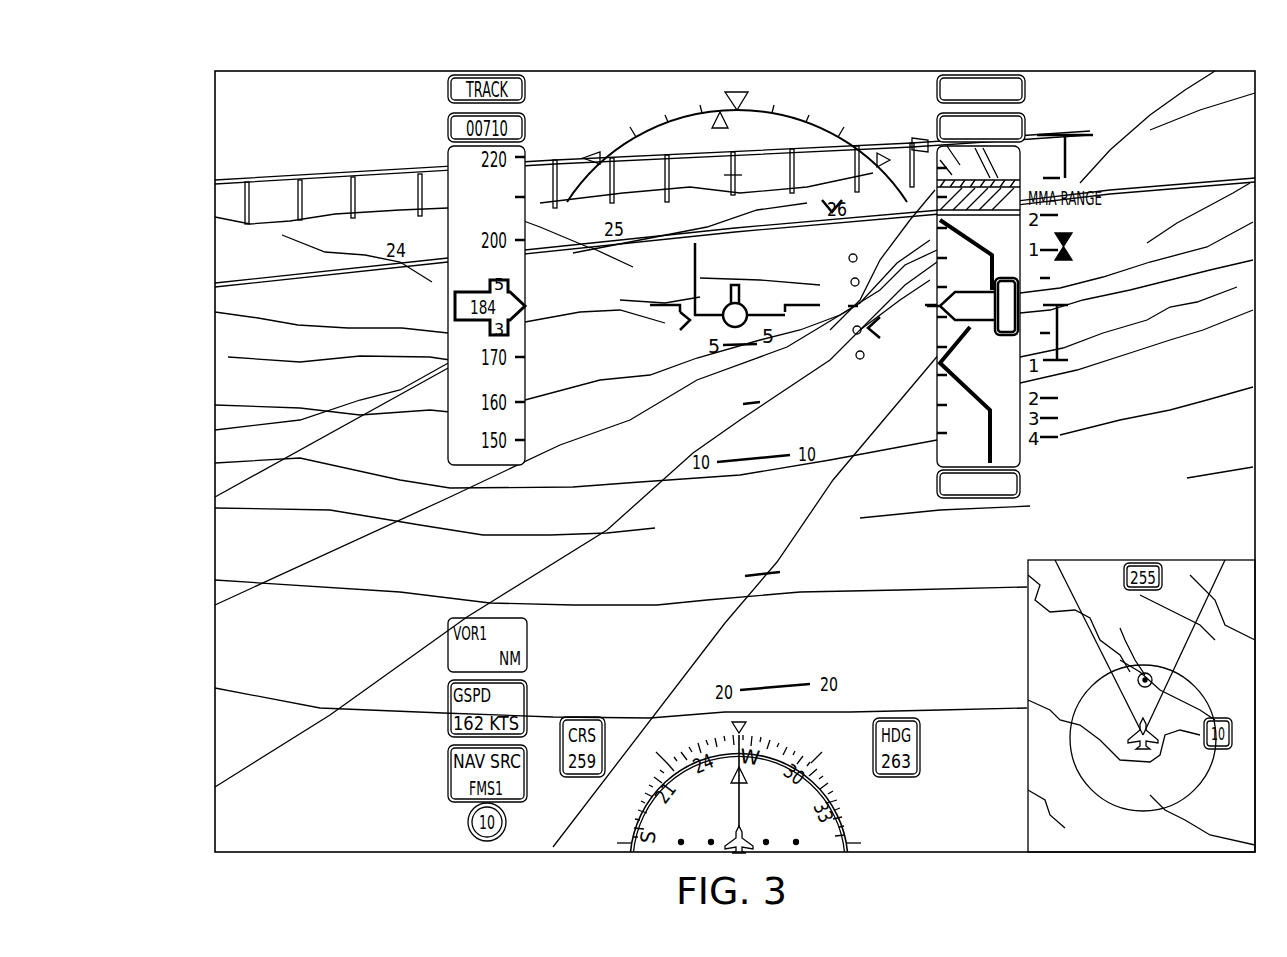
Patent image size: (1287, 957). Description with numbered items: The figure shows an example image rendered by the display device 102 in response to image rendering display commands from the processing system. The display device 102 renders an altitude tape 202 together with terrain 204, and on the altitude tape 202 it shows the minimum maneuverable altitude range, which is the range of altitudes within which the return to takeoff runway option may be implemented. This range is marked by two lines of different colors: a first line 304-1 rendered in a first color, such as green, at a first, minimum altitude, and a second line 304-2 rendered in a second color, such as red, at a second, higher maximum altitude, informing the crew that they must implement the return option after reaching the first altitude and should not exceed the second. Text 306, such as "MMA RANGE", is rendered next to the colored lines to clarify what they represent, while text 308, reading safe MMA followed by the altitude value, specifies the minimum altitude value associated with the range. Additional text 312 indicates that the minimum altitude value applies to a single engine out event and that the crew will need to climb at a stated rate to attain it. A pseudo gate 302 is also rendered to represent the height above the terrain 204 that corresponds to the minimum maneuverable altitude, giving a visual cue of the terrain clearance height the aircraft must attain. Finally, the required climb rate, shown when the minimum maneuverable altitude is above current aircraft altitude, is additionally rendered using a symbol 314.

The display device 102 is at (1110, 54).
The altitude tape 202 is at (935, 175).
The terrain 204 is at (228, 382).
The pseudo gate 302 is at (575, 160).
The first line 304-1 is at (1036, 220).
The second line 304-2 is at (1027, 170).
The text 306 is at (1107, 187).
The text 308 is at (1027, 543).
The text 312 is at (845, 563).
The symbol 314 is at (1072, 248).